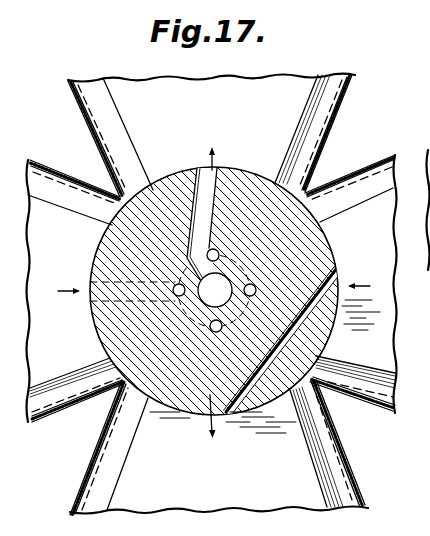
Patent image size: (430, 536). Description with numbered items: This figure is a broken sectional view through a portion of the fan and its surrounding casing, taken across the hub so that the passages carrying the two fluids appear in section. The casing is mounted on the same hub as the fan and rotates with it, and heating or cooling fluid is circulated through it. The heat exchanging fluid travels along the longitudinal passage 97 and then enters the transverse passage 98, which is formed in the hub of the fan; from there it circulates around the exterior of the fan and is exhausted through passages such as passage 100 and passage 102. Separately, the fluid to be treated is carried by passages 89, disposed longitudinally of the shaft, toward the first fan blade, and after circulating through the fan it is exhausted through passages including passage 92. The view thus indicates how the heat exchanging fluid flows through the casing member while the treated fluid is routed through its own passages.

The passage 102 is at (91, 249).
The transverse passage 98 is at (198, 172).
The passage 100 is at (250, 385).
The longitudinal passage 97 is at (212, 300).
The passages 89 is at (218, 250).
The passage 92 is at (174, 292).